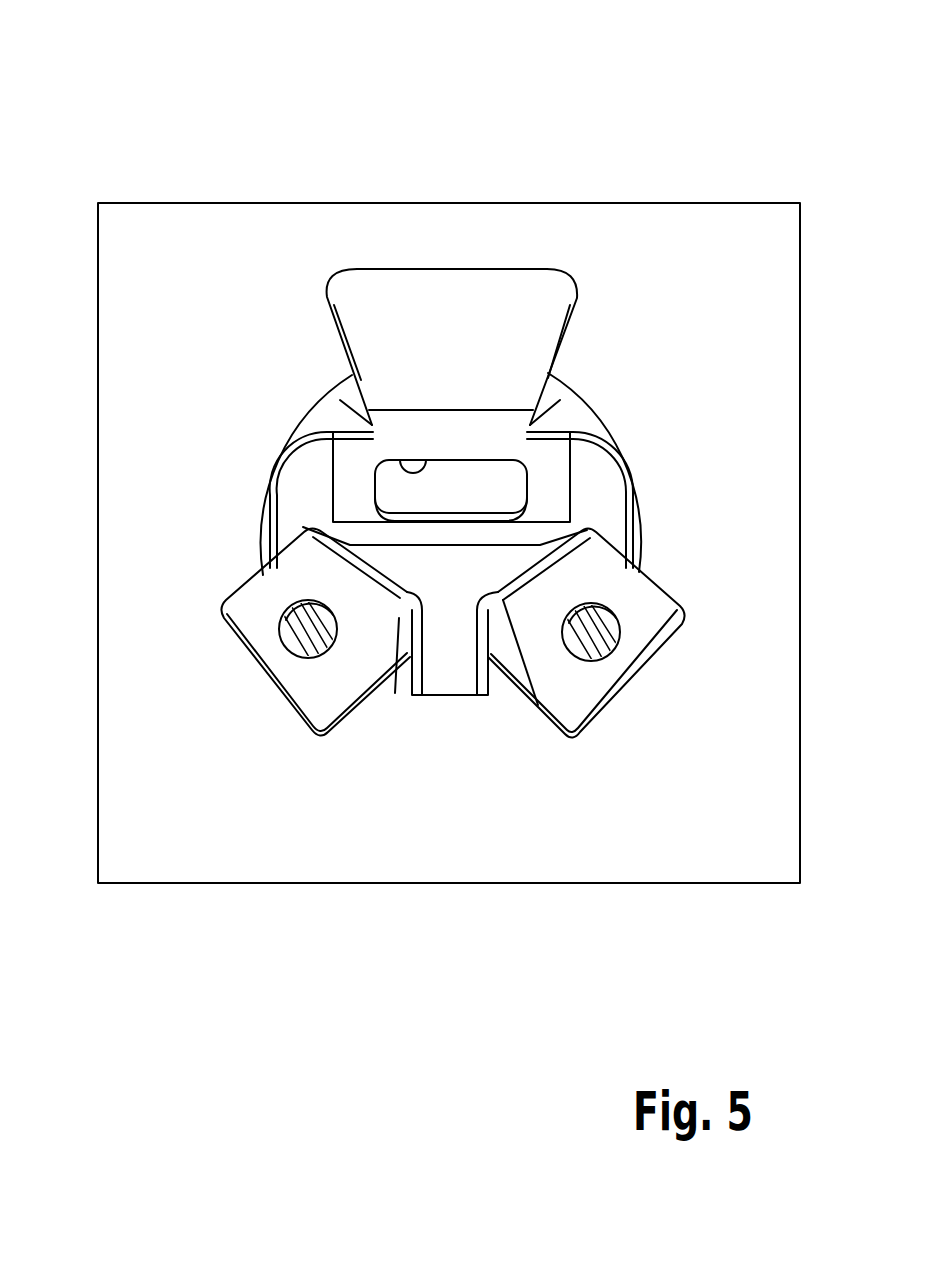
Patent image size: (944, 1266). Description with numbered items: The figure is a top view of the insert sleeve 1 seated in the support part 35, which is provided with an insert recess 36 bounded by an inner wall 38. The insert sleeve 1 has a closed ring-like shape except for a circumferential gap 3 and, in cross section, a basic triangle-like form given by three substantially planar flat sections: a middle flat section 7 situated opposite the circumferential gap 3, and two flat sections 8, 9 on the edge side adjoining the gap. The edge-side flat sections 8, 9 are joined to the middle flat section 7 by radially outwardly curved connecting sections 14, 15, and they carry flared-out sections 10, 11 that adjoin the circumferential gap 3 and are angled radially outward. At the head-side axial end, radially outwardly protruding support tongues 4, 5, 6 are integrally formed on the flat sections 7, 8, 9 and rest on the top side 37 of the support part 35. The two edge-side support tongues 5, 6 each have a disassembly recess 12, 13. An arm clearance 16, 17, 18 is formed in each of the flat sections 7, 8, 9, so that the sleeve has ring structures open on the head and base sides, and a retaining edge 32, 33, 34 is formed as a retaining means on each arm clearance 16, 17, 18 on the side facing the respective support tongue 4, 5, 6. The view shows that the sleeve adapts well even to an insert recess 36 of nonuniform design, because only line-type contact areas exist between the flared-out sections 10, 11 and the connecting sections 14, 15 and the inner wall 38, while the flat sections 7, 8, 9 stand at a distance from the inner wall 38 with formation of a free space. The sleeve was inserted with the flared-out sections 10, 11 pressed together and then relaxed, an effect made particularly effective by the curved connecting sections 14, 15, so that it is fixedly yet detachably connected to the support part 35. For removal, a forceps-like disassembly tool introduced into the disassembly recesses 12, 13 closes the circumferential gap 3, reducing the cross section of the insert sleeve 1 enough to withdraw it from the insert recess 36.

The insert sleeve 1 is at (353, 478).
The circumferential gap 3 is at (455, 618).
The support tongue 4 is at (452, 303).
The support tongue 5 is at (243, 627).
The support tongue 6 is at (585, 697).
The middle flat section 7 is at (298, 509).
The flat section on the edge side 8 is at (400, 597).
The flat section on the edge side 9 is at (503, 588).
The flared-out section 10 is at (420, 653).
The flared-out section 11 is at (480, 653).
The disassembly recess 12 is at (298, 652).
The disassembly recess 13 is at (613, 648).
The connecting section 14 is at (297, 509).
The connecting section 15 is at (597, 477).
The arm clearance 16 is at (447, 486).
The arm clearance 17 is at (404, 672).
The arm clearance 18 is at (499, 673).
The retaining edge 32 is at (404, 461).
The retaining edge 33 is at (400, 597).
The retaining edge 34 is at (500, 597).
The support part 35 is at (383, 843).
The insert recess 36 is at (565, 398).
The top side 37 is at (720, 847).
The inner wall 38 is at (330, 405).